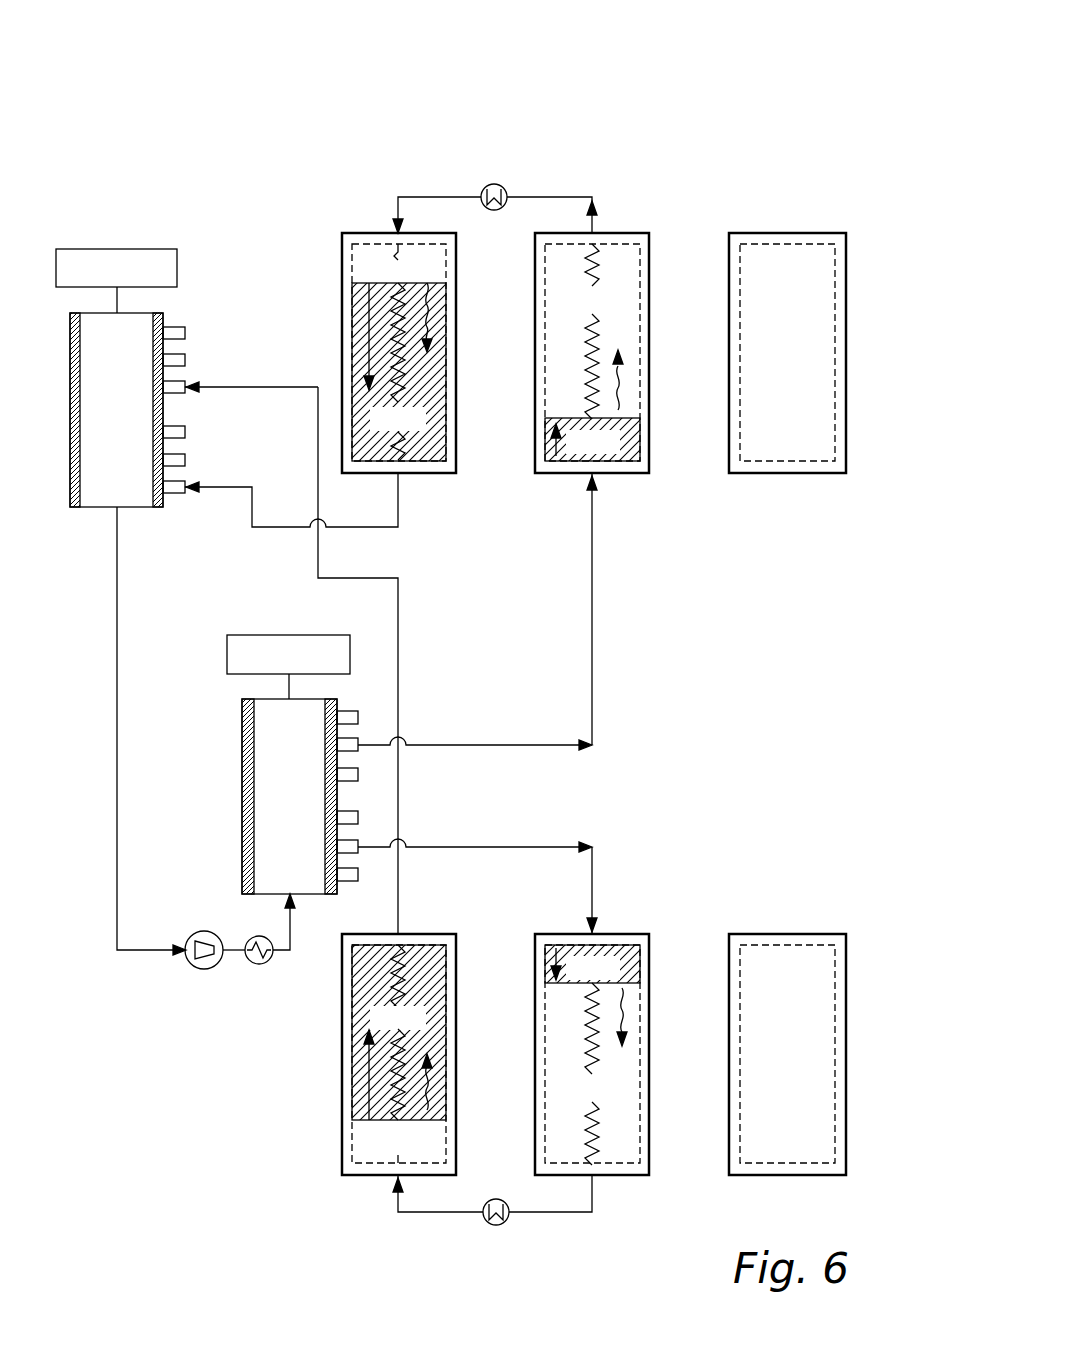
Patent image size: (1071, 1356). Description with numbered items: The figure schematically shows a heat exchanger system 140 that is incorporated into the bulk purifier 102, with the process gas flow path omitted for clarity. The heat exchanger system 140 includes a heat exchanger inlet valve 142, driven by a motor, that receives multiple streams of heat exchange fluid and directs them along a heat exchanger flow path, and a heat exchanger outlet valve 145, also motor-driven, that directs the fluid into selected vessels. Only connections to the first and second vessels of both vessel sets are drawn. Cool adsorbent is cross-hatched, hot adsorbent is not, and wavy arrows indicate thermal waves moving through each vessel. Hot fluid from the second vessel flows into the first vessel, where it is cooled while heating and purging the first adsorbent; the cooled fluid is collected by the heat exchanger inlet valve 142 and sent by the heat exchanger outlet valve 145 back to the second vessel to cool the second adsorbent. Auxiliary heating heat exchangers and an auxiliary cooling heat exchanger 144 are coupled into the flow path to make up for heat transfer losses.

The bulk purifier 102 is at (646, 56).
The heat exchanger system 140 is at (673, 658).
The heat exchanger inlet valve 142 is at (170, 318).
The auxiliary cooling heat exchanger 144 is at (259, 964).
The heat exchanger outlet valve 145 is at (242, 720).